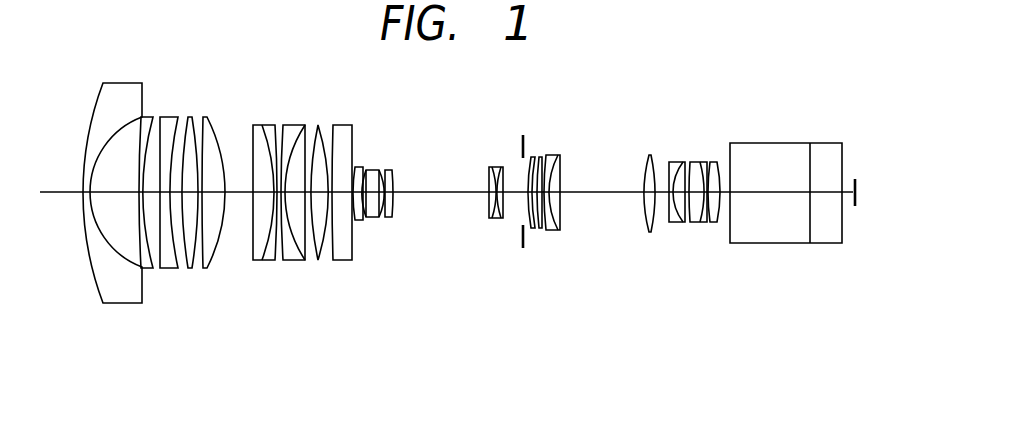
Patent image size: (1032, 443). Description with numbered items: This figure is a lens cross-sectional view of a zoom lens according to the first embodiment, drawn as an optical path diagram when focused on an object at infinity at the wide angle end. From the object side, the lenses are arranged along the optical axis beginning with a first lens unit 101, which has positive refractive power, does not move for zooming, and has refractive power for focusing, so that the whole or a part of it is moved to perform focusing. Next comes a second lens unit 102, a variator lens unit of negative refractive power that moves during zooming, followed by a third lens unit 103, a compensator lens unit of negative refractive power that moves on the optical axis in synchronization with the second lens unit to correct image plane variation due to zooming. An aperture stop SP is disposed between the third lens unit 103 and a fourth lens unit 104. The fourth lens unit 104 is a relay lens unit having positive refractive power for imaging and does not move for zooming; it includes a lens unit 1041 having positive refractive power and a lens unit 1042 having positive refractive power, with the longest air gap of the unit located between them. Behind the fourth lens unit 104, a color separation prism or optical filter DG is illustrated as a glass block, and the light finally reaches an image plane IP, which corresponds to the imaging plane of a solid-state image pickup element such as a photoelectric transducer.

The first lens unit 101 is at (75, 328).
The second lens unit 102 is at (397, 328).
The third lens unit 103 is at (458, 330).
The fourth lens unit 104 is at (619, 272).
The lens unit having positive refractive power 1041 is at (520, 260).
The lens unit having positive refractive power 1042 is at (676, 235).
The aperture stop SP is at (523, 143).
The color separation prism or optical filter DG is at (758, 142).
The image plane IP is at (857, 178).